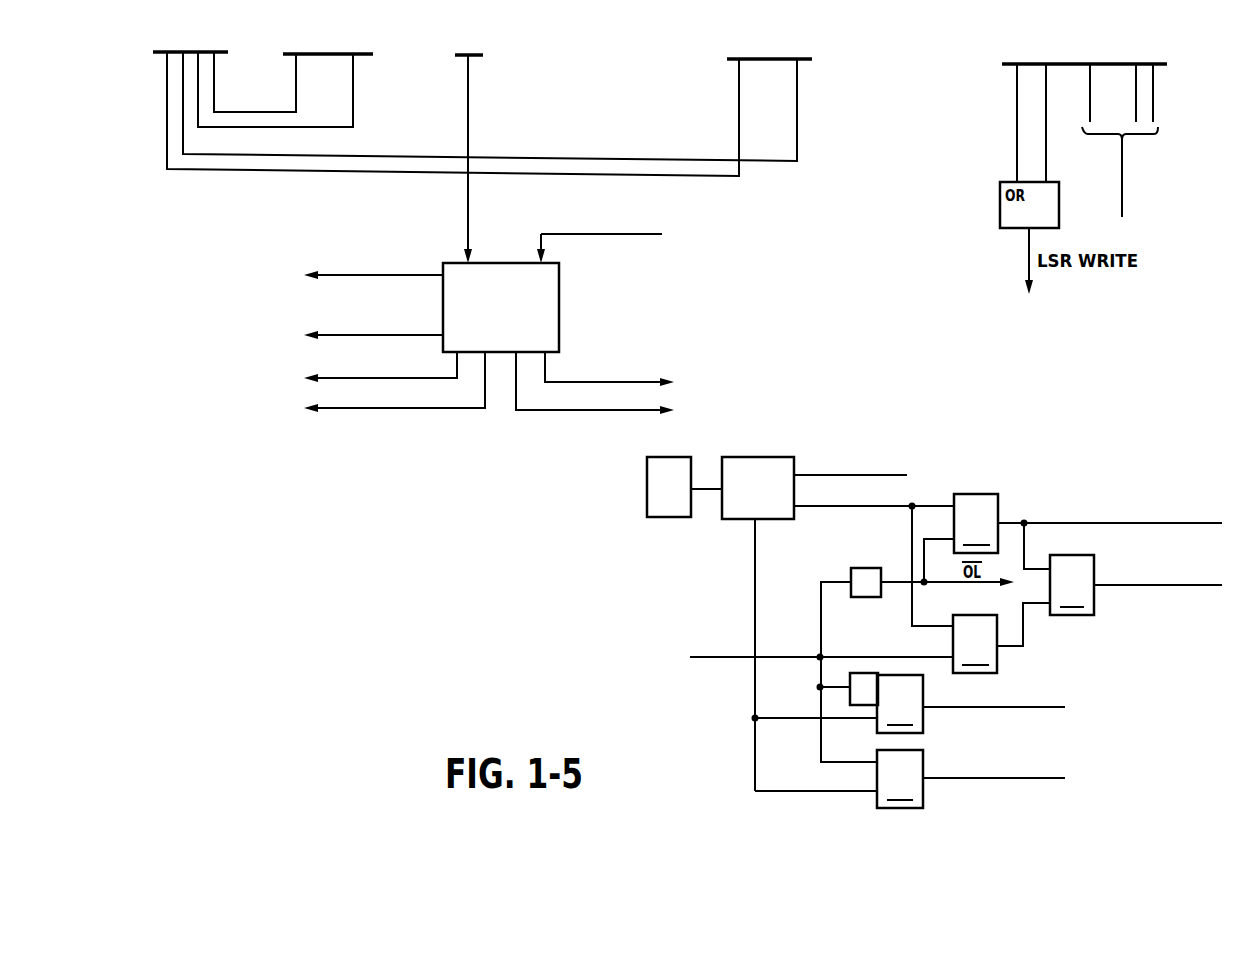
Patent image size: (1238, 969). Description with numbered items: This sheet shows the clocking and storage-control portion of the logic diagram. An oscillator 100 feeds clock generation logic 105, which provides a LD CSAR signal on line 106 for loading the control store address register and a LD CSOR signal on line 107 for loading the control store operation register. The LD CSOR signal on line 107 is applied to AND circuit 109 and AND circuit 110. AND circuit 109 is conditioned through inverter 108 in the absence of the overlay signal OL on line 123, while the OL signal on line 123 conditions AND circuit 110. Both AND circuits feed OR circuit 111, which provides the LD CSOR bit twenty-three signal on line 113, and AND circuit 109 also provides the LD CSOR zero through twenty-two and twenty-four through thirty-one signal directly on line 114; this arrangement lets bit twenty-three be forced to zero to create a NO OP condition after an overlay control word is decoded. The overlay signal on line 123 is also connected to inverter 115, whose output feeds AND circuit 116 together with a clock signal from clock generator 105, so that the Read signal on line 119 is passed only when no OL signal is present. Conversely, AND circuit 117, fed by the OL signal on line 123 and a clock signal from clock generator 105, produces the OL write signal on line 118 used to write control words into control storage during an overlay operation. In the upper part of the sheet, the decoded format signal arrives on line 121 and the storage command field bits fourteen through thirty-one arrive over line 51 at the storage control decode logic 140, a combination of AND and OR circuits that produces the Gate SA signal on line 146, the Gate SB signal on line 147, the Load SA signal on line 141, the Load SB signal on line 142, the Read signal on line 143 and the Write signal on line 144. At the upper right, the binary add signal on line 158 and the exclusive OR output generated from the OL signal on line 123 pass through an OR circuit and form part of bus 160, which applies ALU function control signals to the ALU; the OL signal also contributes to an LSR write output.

The line 121 is at (491, 159).
The line 51 is at (599, 260).
The storage control decode logic 140 is at (524, 307).
The line 146 is at (373, 250).
The line 147 is at (373, 310).
The line 141 is at (380, 357).
The line 142 is at (394, 406).
The line 143 is at (609, 360).
The line 144 is at (595, 406).
The line 123 is at (888, 385).
The line 158 is at (1183, 93).
The bus 160 is at (1142, 173).
The oscillator 100 is at (669, 514).
The clock generation logic 105 is at (755, 514).
The line 106 is at (890, 475).
The line 107 is at (874, 516).
The inverter 108 is at (866, 604).
The AND circuit 109 is at (976, 523).
The AND circuit 110 is at (975, 644).
The OR circuit 111 is at (1072, 585).
The line 113 is at (1158, 589).
The line 114 is at (1110, 498).
The inverter 115 is at (825, 692).
The AND circuit 116 is at (900, 704).
The AND circuit 117 is at (900, 779).
The line 118 is at (994, 754).
The line 119 is at (994, 689).